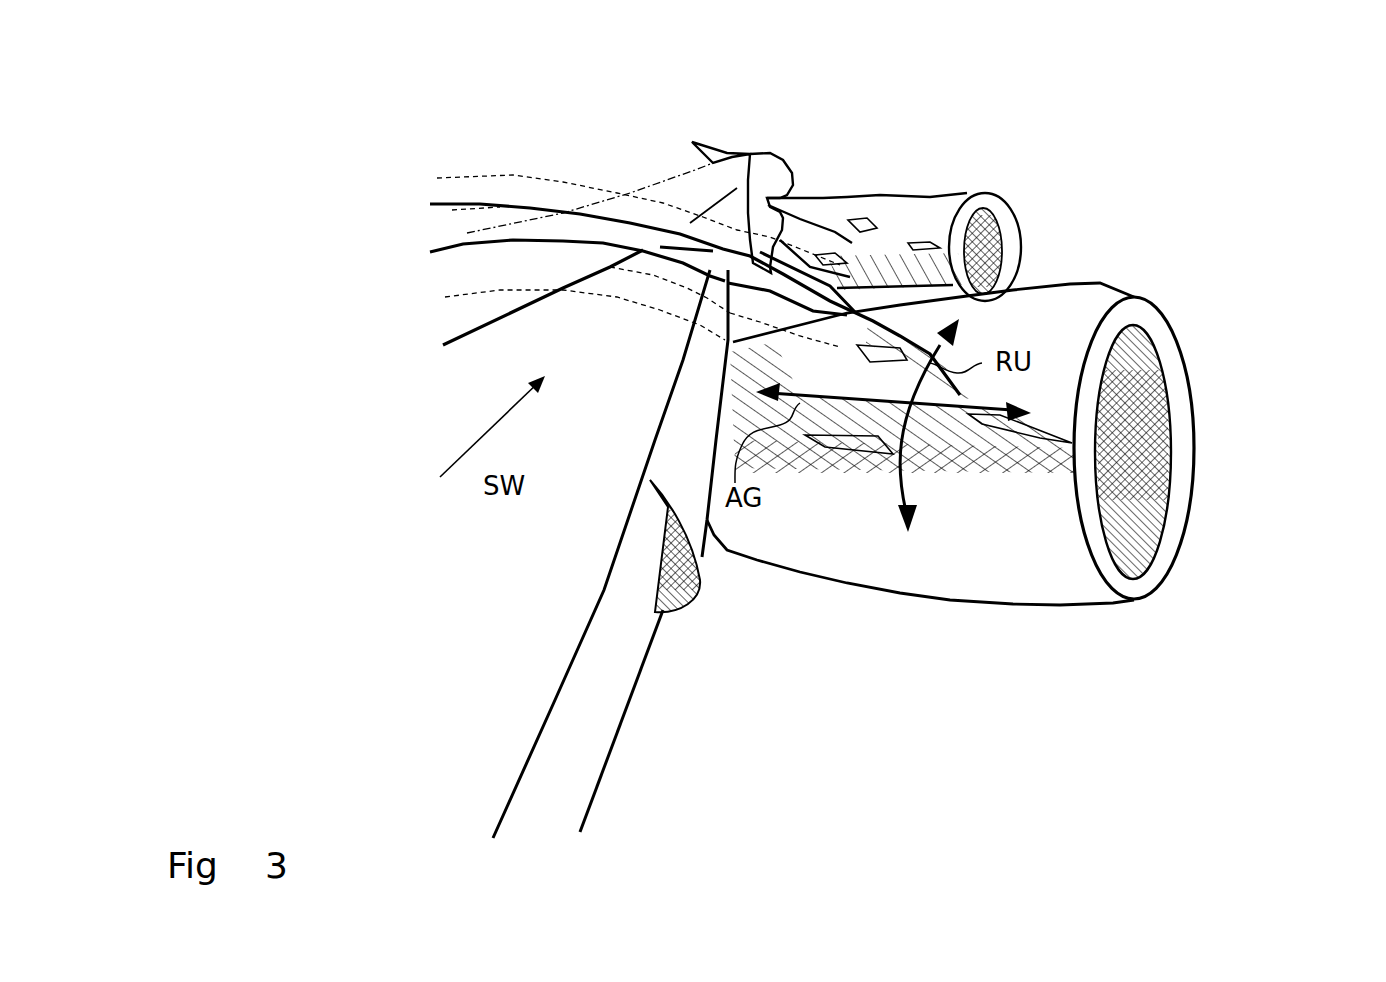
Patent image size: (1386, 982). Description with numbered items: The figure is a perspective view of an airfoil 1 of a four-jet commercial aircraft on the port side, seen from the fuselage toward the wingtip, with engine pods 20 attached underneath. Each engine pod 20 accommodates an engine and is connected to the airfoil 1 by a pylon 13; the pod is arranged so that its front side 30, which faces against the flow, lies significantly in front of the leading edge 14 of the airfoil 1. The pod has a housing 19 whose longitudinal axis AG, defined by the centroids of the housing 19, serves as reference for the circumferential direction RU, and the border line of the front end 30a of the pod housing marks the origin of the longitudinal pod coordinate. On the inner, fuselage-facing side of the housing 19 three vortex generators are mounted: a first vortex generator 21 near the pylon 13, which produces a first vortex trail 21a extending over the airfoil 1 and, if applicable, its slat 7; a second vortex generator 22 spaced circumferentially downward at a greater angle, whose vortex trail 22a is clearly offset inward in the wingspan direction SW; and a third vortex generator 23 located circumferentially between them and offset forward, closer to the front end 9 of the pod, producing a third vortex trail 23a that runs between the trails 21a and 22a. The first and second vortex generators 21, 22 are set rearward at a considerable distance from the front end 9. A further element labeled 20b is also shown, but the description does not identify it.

The airfoil 1 is at (458, 656).
The slat 7 is at (690, 500).
The front end of the engine pod 9 is at (1110, 463).
The pylon 13 is at (750, 307).
The leading edge of the airfoil 14 is at (618, 742).
The housing of the engine pod 19 is at (1013, 560).
The engine pod 20 is at (1097, 641).
The upper nacelle section 20b is at (923, 207).
The first vortex generator 21 is at (863, 220).
The first vortex trail 21a is at (490, 242).
The second vortex generator 22 is at (927, 243).
The second vortex trail 22a is at (527, 173).
The third vortex generator 23 is at (830, 250).
The third vortex trail 23a is at (580, 200).
The front side of the engine pod 30 is at (1205, 370).
The front end of the pod housing 30a is at (1195, 440).